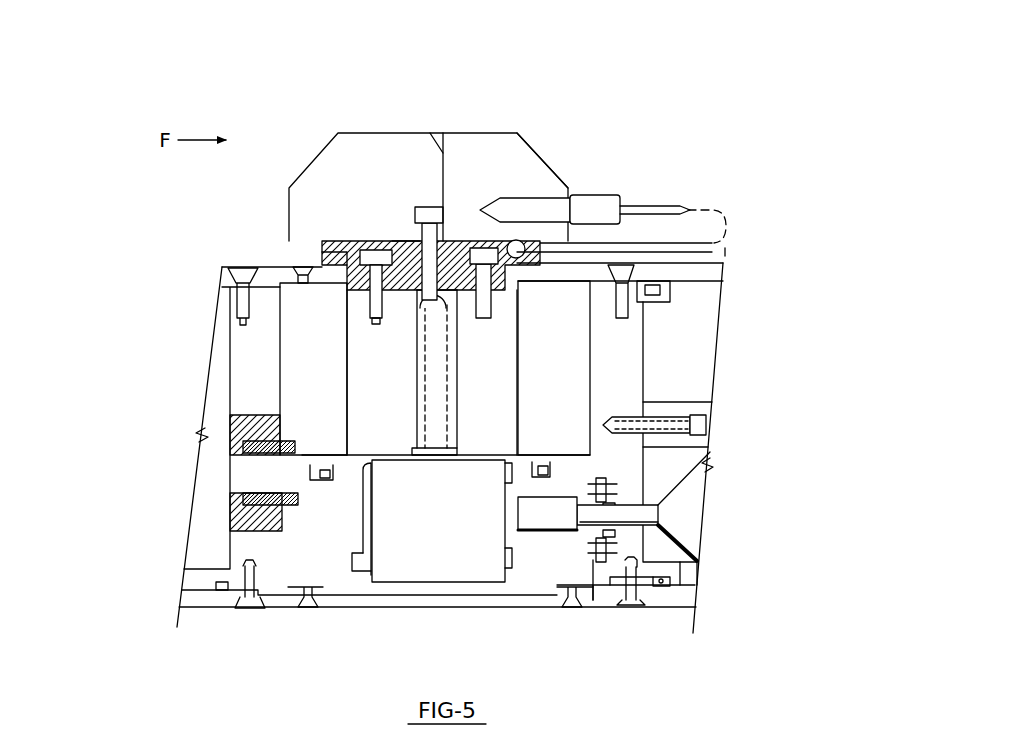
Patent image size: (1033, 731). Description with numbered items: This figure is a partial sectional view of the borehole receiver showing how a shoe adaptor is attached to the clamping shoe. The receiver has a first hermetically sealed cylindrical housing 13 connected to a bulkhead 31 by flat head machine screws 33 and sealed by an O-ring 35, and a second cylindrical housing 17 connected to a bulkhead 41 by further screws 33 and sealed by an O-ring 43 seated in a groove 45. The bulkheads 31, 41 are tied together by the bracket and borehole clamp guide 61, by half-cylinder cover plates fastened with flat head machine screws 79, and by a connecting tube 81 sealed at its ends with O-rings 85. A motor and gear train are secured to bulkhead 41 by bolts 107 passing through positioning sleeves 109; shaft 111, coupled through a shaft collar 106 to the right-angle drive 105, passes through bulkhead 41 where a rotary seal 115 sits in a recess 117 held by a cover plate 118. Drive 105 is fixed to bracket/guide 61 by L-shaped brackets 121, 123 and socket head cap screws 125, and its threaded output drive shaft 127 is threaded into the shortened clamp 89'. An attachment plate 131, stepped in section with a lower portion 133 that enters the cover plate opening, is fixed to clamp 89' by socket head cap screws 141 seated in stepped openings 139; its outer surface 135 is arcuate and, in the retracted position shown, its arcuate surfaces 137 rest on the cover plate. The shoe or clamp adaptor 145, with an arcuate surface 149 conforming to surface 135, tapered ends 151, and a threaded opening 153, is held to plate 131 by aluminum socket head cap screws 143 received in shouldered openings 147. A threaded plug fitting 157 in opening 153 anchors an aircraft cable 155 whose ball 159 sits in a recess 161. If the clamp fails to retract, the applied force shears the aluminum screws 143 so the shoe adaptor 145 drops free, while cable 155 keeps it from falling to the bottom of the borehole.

The first hermetically sealed cylindrical housing 13 is at (203, 613).
The second hermetically sealed cylindrical housing 17 is at (696, 597).
The bulkhead 31 is at (247, 552).
The flat head machine screw 33 is at (238, 274).
The O-ring 35 is at (218, 590).
The bulkhead 41 is at (618, 333).
The O-ring 43 is at (665, 586).
The groove 45 is at (668, 588).
The bracket and borehole clamp guide 61 is at (304, 352).
The flat head machine screw 79 is at (300, 268).
The connecting tube 81 is at (243, 455).
The O-ring 85 is at (232, 510).
The clamp 89' is at (432, 372).
The right-angle drive 105 is at (415, 560).
The shaft collar 106 is at (557, 522).
The bolt 107 is at (700, 427).
The positioning sleeve 109 is at (707, 410).
The shaft 111 is at (688, 537).
The rotary seal 115 is at (658, 512).
The recess 117 is at (617, 537).
The cover plate 118 is at (607, 493).
The L-shaped bracket 121 is at (365, 520).
The L-shaped bracket 123 is at (505, 498).
The socket head cap screw 125 is at (356, 568).
The threaded output drive shaft 127 is at (433, 408).
The attachment plate 131 is at (322, 262).
The lower portion 133 is at (403, 293).
The outer surface 135 is at (333, 243).
The arcuate surface 137 is at (512, 268).
The stepped opening 139 is at (395, 247).
The socket head cap screw 141 is at (367, 249).
The aluminum socket head cap screw 143 is at (421, 206).
The shoe or clamp adaptor 145 is at (503, 148).
The shouldered opening 147 is at (432, 150).
The arcuate surface 149 is at (322, 252).
The tapered end 151 is at (540, 153).
The threaded opening 153 is at (510, 200).
The aircraft cable 155 is at (680, 210).
The threaded plug fitting 157 is at (607, 205).
The ball 159 is at (543, 247).
The recess 161 is at (512, 241).